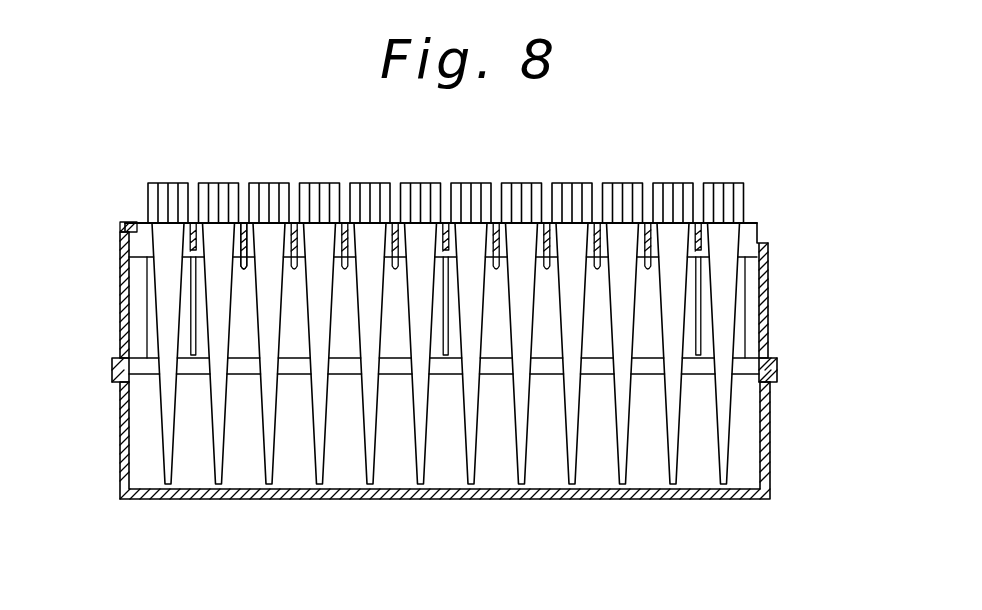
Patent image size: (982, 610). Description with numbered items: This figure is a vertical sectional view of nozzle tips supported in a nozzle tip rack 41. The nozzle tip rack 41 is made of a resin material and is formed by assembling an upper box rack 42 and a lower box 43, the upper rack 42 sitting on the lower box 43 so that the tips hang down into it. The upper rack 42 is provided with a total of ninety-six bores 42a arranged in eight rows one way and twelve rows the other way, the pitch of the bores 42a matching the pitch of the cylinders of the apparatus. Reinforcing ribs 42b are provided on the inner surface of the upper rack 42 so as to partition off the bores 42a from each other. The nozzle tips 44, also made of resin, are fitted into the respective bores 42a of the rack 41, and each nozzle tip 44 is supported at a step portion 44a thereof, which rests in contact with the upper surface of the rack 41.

The nozzle tip rack 41 is at (820, 295).
The upper box rack 42 is at (766, 341).
The bores 42a is at (186, 230).
The reinforcing ribs 42b is at (239, 262).
The lower box 43 is at (768, 419).
The nozzle tips 44 is at (158, 246).
The step portion 44a is at (136, 222).